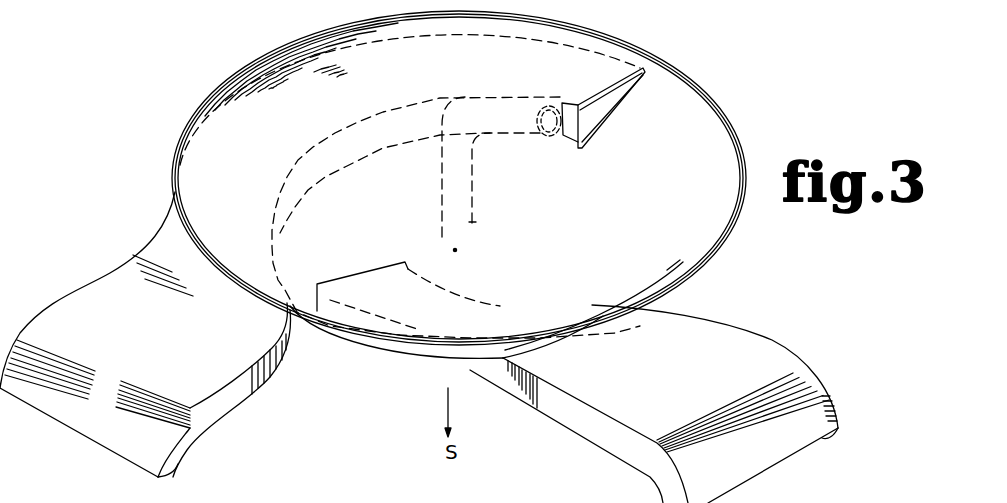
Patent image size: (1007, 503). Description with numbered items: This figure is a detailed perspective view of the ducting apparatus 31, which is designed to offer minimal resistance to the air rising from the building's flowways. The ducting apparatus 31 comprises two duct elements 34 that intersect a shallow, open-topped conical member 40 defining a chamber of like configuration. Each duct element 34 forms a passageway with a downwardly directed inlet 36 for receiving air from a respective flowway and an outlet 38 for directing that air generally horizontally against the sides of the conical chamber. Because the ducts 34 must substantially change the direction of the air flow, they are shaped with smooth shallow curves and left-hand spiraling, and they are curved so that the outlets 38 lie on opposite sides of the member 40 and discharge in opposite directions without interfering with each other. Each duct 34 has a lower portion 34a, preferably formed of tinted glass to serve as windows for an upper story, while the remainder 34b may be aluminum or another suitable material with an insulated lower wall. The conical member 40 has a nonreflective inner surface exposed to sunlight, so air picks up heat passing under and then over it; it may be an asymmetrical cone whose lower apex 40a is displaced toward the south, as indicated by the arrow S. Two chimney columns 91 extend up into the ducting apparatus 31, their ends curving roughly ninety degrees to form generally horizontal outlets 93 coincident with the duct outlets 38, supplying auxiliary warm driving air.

The ducting apparatus 31 is at (750, 273).
The duct element 34 is at (95, 307).
The lower portion 34a is at (90, 422).
The remainder of the duct 34b is at (60, 317).
The inlet 36 is at (170, 475).
The outlet 38 is at (602, 122).
The conical member 40 is at (695, 110).
The lower apex 40a is at (453, 250).
The chimney column 91 is at (476, 222).
The horizontal outlet 93 is at (551, 138).